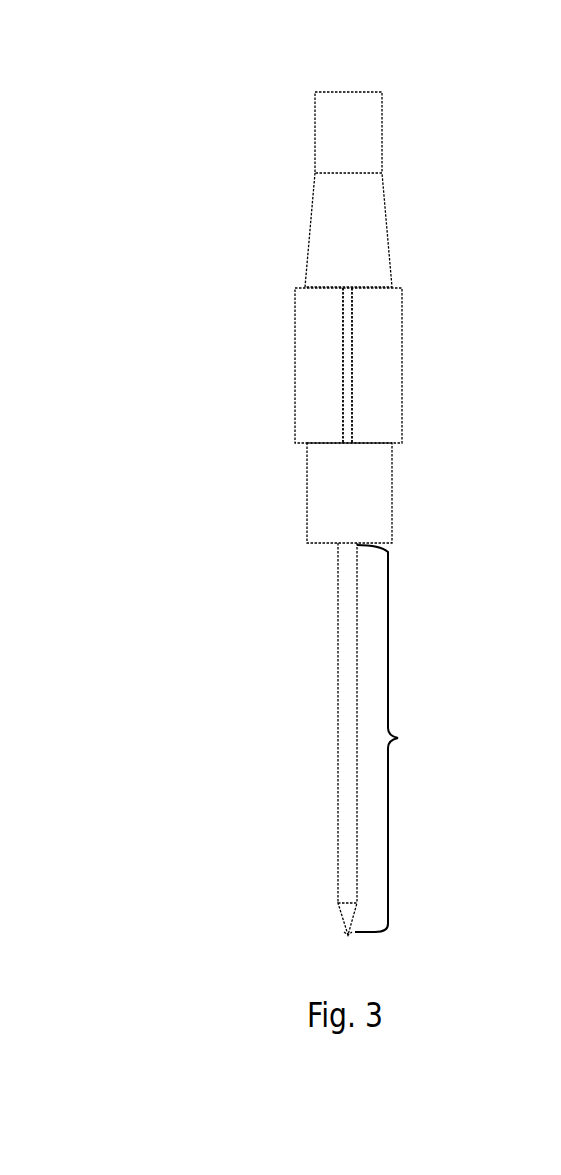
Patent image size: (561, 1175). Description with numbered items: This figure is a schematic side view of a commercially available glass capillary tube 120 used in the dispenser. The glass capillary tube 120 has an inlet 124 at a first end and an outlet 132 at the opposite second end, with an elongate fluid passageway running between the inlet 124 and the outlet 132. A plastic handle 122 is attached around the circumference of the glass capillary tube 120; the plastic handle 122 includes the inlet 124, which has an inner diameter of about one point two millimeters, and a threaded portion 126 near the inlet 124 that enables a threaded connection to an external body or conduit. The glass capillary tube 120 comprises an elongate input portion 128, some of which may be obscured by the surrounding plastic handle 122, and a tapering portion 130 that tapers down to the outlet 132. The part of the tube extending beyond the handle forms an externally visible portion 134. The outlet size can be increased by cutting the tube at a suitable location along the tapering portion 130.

The glass capillary tube 120 is at (173, 104).
The plastic handle 122 is at (280, 338).
The inlet 124 is at (347, 76).
The threaded portion 126 is at (396, 135).
The elongate input portion 128 is at (324, 675).
The tapering portion 130 is at (325, 915).
The outlet 132 is at (333, 940).
The externally visible portion 134 is at (435, 740).